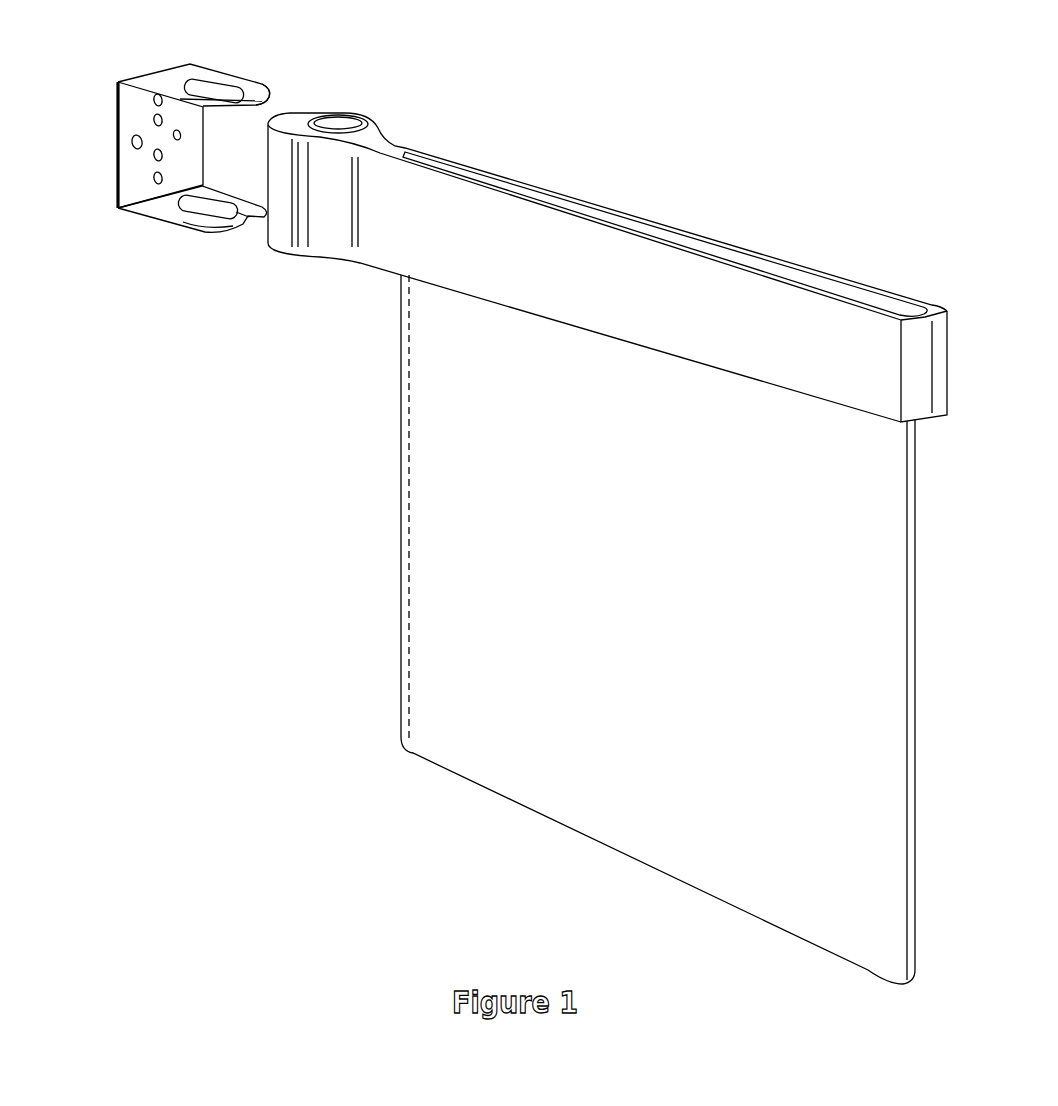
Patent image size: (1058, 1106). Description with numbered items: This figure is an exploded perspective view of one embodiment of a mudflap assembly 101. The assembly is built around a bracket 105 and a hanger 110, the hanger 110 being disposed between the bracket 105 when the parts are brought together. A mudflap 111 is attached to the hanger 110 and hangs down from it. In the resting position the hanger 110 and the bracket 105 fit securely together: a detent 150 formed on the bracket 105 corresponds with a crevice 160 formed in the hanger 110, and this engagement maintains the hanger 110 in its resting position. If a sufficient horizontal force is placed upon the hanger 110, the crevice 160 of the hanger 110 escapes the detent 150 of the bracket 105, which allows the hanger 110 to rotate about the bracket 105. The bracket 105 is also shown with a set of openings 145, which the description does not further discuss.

The mudflap assembly 101 is at (685, 131).
The bracket 105 is at (165, 123).
The hanger 110 is at (607, 261).
The mudflap 111 is at (453, 540).
The mounting holes 145 is at (151, 178).
The detent 150 is at (246, 104).
The crevice 160 is at (388, 140).